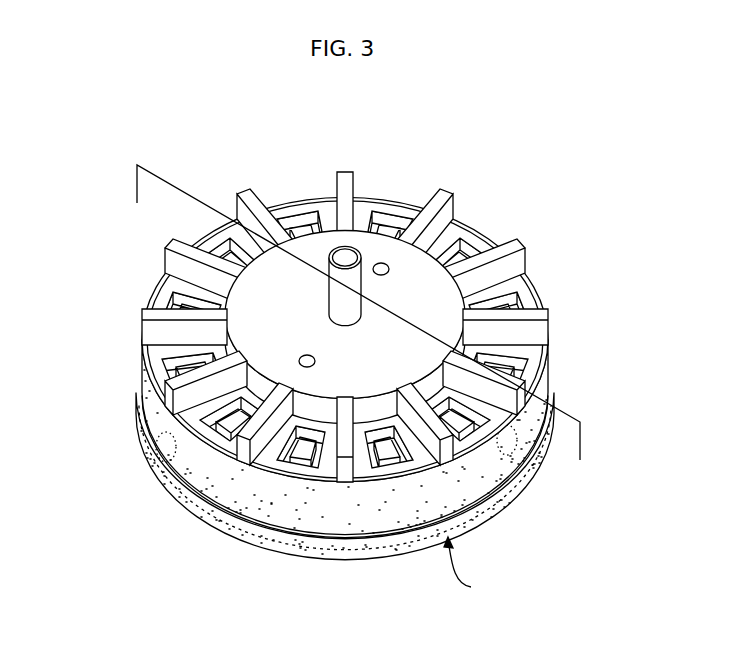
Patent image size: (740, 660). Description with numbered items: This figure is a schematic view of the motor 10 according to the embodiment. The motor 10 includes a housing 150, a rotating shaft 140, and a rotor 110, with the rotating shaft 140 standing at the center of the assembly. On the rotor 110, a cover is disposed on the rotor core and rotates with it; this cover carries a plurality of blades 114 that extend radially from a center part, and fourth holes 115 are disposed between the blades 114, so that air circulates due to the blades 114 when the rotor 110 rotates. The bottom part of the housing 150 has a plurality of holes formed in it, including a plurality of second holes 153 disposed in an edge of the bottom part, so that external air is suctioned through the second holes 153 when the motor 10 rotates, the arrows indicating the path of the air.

The motor 10 is at (58, 141).
The rotor 110 is at (401, 373).
The blades 114 is at (388, 305).
The fourth holes 115 is at (530, 358).
The rotating shaft 140 is at (345, 262).
The housing 150 is at (330, 565).
The second holes 153 is at (218, 536).